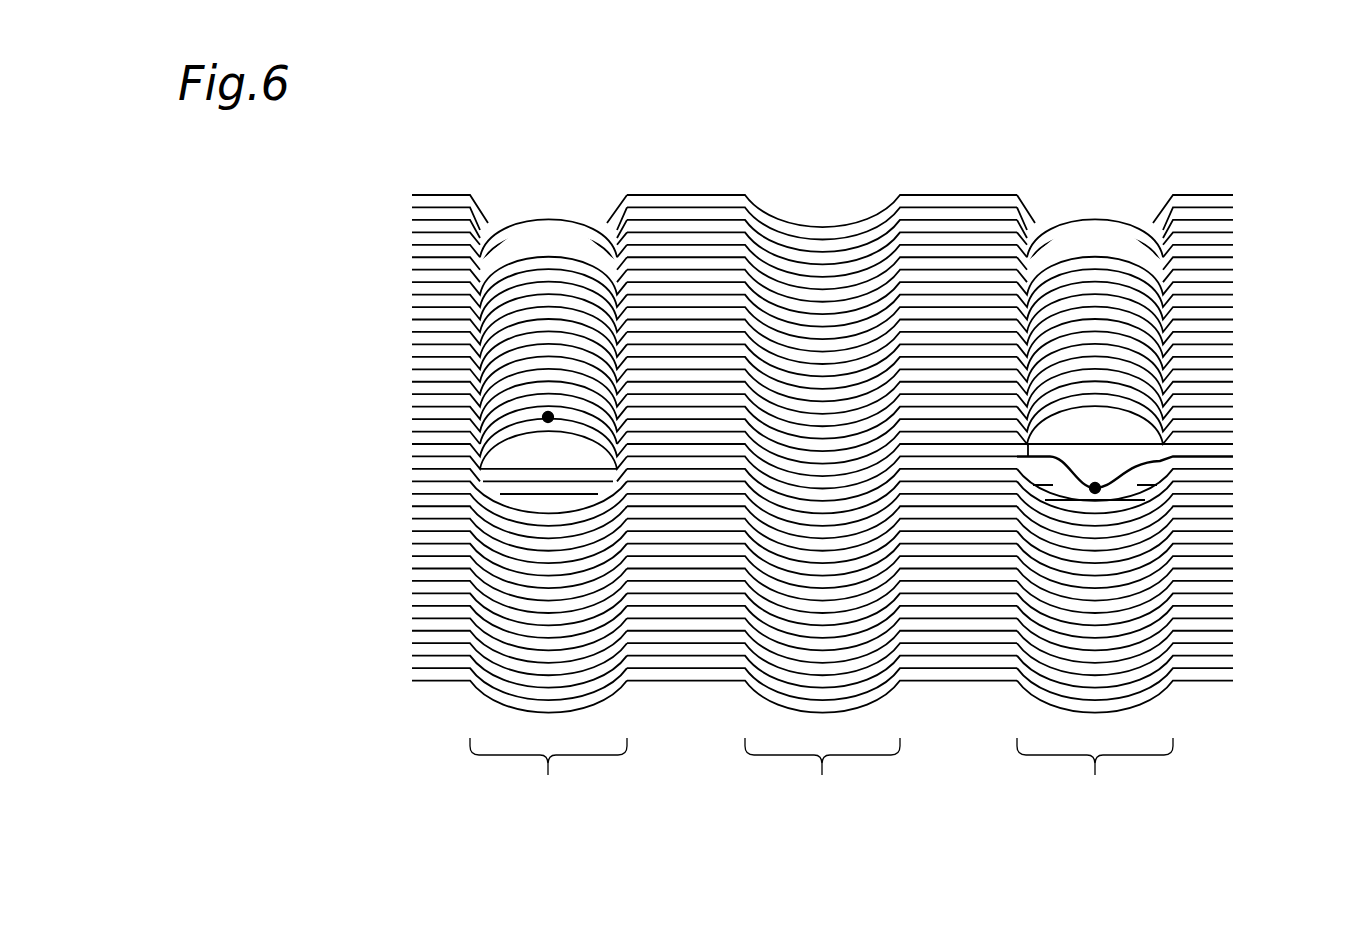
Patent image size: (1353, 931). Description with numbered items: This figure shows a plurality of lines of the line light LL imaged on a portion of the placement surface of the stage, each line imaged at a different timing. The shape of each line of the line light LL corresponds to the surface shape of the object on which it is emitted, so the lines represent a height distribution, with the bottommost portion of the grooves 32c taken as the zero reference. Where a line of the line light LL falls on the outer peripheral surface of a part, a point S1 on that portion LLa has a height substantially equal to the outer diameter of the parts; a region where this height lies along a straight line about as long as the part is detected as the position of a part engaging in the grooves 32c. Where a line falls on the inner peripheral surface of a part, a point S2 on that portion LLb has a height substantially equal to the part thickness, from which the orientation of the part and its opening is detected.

The line light LL is at (1223, 195).
The portion of a line of the line light emitted on the outer peripheral surface of a LLa is at (560, 412).
The portion of a line of the line light emitted on the inner peripheral surface of a LLb is at (1133, 474).
The point on portion LLa S1 is at (548, 417).
The point on portion LLb S2 is at (1095, 488).
The grooves 32c is at (821, 776).